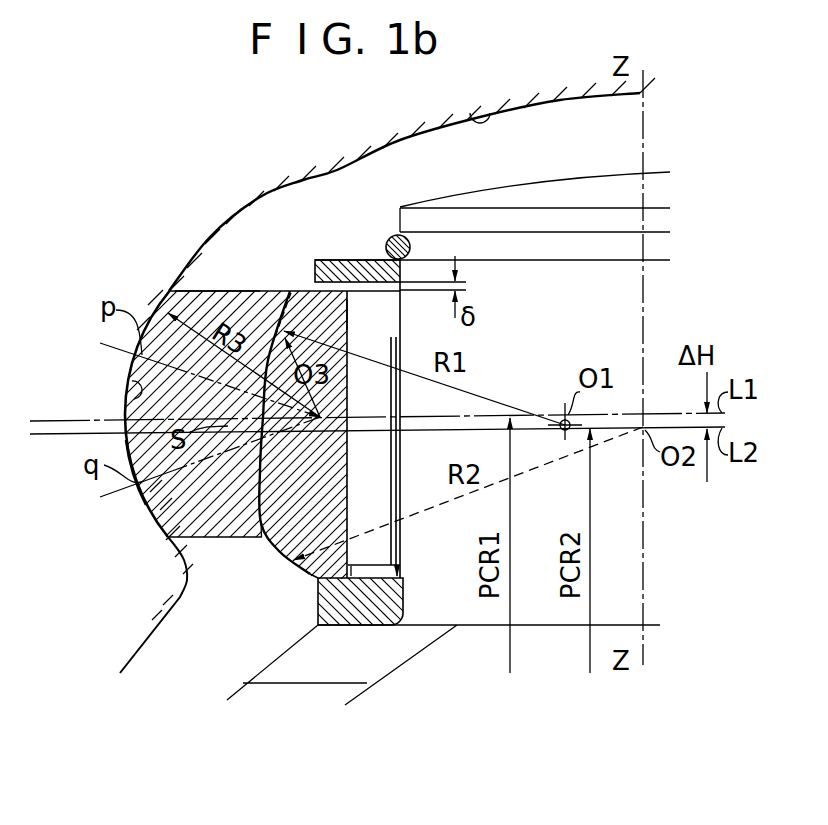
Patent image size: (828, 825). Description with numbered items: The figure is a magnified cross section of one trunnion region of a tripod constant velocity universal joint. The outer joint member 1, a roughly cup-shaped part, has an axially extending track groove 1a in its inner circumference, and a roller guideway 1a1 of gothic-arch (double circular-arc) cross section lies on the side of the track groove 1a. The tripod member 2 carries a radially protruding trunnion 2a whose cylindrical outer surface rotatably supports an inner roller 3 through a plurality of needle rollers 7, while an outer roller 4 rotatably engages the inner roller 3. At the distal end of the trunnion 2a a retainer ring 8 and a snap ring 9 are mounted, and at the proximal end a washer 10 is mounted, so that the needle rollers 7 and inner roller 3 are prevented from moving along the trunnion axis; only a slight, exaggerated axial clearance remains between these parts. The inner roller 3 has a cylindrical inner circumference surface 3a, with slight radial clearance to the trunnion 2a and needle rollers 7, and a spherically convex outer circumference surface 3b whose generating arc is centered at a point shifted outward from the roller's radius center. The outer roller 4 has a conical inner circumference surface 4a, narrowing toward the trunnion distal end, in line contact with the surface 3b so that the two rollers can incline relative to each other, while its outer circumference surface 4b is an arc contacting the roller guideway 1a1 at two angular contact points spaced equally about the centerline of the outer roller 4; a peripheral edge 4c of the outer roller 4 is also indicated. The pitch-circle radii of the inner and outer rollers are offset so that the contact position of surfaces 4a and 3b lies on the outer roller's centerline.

The outer joint member 1 is at (107, 642).
The track groove 1a is at (481, 114).
The roller guideway 1a1 is at (130, 390).
The tripod member 2 is at (312, 672).
The trunnion 2a is at (556, 282).
The inner roller 3 is at (313, 582).
The inner circumference surface 3a is at (350, 315).
The outer circumference surface 3b is at (290, 288).
The outer roller 4 is at (174, 556).
The inner circumference surface 4a is at (262, 530).
The outer circumference surface 4b is at (138, 502).
The lens peripheral edge 4c is at (222, 288).
The needle rollers 7 is at (378, 548).
The retainer ring 8 is at (334, 260).
The snap ring 9 is at (396, 241).
The washer 10 is at (378, 598).